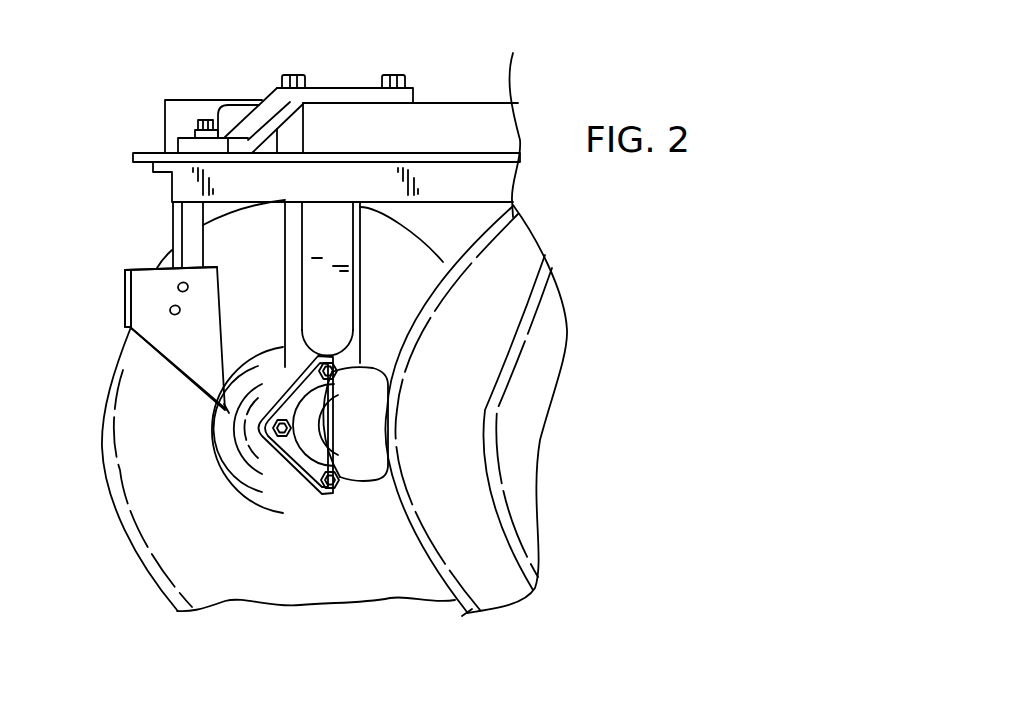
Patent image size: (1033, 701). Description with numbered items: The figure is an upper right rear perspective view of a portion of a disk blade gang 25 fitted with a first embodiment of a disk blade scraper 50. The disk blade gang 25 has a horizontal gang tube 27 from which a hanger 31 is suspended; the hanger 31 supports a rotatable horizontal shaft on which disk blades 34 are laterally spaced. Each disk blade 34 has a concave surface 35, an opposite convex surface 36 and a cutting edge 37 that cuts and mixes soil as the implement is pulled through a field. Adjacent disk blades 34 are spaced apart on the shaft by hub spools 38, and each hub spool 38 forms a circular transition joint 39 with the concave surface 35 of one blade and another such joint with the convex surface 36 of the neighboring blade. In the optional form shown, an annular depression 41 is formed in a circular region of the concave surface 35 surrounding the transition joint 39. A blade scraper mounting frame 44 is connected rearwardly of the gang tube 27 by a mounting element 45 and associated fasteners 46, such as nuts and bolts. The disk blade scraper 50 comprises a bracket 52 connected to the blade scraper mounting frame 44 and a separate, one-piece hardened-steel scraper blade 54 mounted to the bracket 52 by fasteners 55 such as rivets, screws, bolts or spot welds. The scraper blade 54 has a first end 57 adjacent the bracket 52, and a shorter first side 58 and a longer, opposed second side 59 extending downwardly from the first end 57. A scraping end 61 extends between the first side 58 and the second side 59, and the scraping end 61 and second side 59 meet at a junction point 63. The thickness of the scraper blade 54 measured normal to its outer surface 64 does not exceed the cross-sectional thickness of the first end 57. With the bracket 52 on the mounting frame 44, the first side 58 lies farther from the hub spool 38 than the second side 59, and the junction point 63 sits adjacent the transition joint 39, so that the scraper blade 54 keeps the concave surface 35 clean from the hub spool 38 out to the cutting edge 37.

The disk blade gang 25 is at (633, 319).
The horizontal gang tube 27 is at (450, 115).
The hanger 31 is at (347, 310).
The disk blade 34 is at (527, 252).
The concave surface 35 is at (243, 581).
The convex surface 36 is at (118, 555).
The cutting edge 37 is at (100, 447).
The hub spool 38 is at (372, 385).
The circular transition joint 39 is at (255, 353).
The annular depression 41 is at (258, 493).
The blade scraper mounting frame 44 is at (503, 178).
The mounting element 45 is at (336, 96).
The fasteners 46 is at (293, 75).
The disk blade scraper 50 is at (148, 217).
The bracket 52 is at (195, 243).
The scraper blade 54 is at (170, 342).
The fasteners 55 is at (158, 304).
The first end 57 is at (203, 278).
The first side 58 is at (122, 312).
The second side 59 is at (228, 430).
The scraping end 61 is at (133, 346).
The junction point 63 is at (226, 417).
The outer surface 64 is at (186, 343).